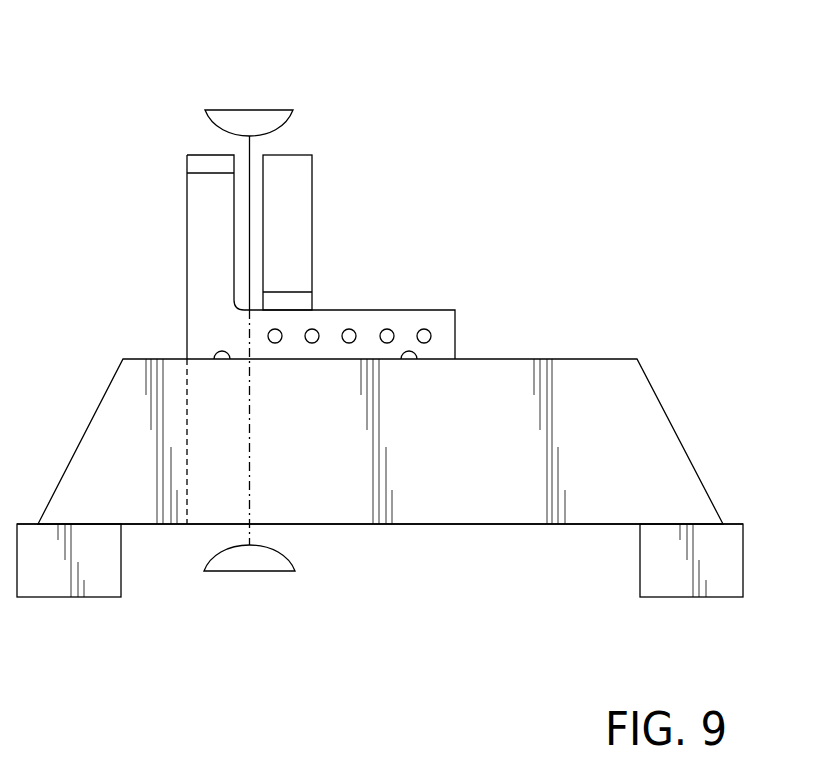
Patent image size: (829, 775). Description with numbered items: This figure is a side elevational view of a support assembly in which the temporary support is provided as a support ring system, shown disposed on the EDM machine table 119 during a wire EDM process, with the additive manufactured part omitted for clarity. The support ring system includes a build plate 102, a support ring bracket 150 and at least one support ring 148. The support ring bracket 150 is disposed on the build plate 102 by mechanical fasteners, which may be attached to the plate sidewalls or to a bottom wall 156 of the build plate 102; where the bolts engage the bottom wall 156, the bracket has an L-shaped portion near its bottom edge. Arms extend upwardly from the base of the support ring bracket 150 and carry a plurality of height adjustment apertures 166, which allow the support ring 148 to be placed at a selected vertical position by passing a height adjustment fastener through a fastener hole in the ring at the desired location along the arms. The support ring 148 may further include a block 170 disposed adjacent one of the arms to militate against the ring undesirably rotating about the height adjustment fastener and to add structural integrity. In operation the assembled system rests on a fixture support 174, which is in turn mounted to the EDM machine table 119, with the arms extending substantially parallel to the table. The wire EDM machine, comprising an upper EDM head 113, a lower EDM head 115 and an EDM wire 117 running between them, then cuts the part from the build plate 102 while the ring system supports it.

The build plate 102 is at (187, 165).
The upper EDM head 113 is at (250, 110).
The lower EDM head 115 is at (250, 571).
The EDM wire 117 is at (252, 147).
The EDM machine table 119 is at (71, 597).
The support ring 148 is at (312, 190).
The support ring bracket 150 is at (455, 333).
The bottom wall 156 is at (187, 238).
The height adjustment apertures 166 is at (424, 329).
The block 170 is at (312, 292).
The fixture support 174 is at (680, 440).